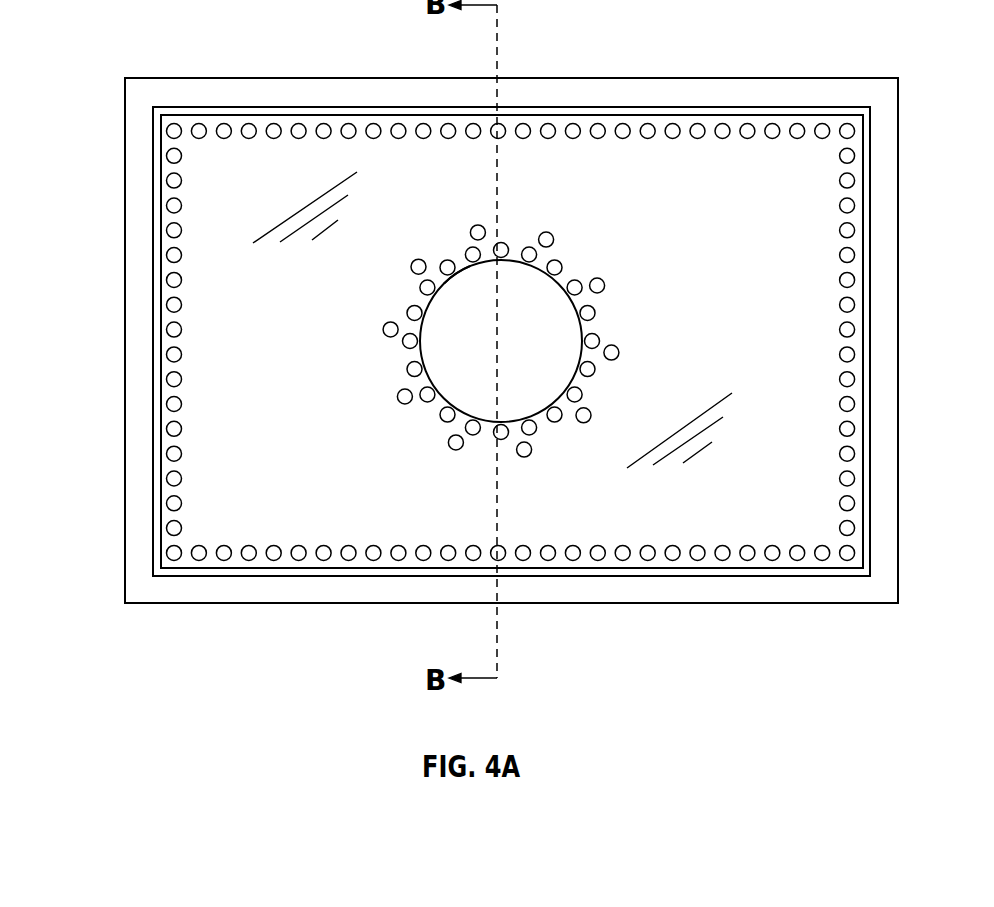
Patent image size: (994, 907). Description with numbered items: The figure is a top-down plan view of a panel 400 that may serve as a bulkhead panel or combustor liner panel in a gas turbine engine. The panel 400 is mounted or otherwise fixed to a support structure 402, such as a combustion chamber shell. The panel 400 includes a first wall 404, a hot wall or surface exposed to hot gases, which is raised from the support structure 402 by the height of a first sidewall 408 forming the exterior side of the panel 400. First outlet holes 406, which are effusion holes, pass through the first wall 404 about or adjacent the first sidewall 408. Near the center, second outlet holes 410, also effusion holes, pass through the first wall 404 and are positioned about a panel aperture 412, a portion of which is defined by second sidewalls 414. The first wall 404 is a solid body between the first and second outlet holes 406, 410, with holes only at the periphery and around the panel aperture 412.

The panel 400 is at (150, 226).
The support structure 402 is at (603, 78).
The first wall 404 is at (305, 279).
The first outlet holes 406 is at (249, 124).
The first sidewall 408 is at (153, 352).
The second outlet holes 410 is at (598, 278).
The panel aperture 412 is at (553, 354).
The second sidewalls 414 is at (445, 287).